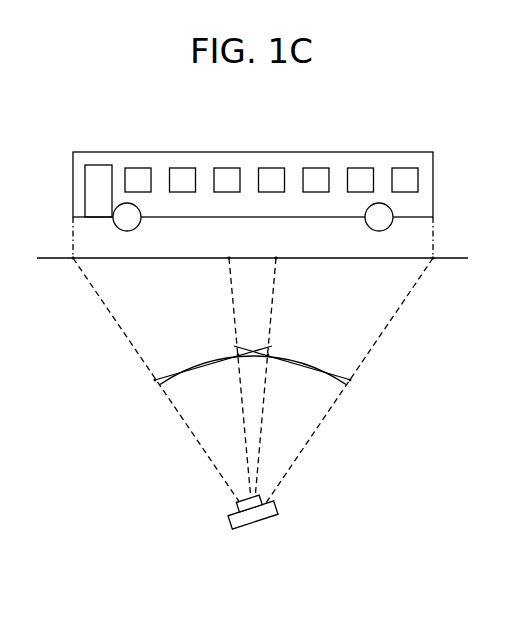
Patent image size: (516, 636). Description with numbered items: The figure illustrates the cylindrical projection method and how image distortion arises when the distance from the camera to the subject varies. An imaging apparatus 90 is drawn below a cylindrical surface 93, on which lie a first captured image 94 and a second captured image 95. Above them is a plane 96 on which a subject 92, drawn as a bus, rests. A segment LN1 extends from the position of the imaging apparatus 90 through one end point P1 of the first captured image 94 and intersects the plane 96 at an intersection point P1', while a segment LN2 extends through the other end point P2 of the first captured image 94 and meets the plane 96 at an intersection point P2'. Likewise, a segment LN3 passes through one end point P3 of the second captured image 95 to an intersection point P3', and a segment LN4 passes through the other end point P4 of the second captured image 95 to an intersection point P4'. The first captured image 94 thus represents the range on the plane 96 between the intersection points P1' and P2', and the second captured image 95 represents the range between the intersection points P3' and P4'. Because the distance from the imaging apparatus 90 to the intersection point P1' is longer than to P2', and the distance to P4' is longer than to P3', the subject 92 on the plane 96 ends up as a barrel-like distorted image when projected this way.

The imaging apparatus 90 is at (258, 522).
The subject 92 is at (400, 152).
The cylindrical surface 93 is at (318, 369).
The first captured image 94 is at (157, 378).
The second captured image 95 is at (350, 380).
The plane 96 is at (453, 258).
The segment LN1 is at (181, 418).
The segment LN2 is at (257, 472).
The segment LN3 is at (245, 440).
The segment LN4 is at (306, 447).
The end point P1 is at (134, 400).
The end point P2 is at (296, 343).
The end point P3 is at (207, 343).
The end point P4 is at (371, 400).
The intersection point P1' is at (49, 280).
The intersection point P2' is at (300, 280).
The intersection point P3' is at (206, 280).
The intersection point P4' is at (456, 280).